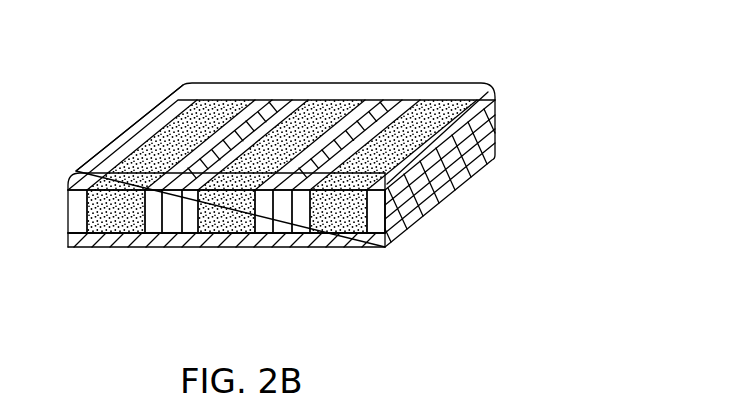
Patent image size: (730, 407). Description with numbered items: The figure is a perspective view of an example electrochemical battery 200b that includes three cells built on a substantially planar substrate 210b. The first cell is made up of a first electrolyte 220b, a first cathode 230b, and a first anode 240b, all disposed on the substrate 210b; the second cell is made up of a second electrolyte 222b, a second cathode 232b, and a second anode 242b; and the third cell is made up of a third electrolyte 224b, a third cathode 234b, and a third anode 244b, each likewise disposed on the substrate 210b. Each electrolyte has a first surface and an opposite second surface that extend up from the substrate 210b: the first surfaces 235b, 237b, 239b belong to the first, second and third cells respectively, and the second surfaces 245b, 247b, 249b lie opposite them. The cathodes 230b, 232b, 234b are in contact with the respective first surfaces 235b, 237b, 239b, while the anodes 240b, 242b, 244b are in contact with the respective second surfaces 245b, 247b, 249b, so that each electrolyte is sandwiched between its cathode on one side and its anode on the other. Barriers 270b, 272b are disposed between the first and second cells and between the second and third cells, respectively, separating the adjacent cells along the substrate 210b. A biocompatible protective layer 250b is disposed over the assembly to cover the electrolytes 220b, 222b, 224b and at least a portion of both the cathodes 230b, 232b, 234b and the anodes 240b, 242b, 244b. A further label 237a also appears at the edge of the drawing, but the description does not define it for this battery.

The electrochemical battery 200b is at (430, 68).
The substrate 210b is at (68, 240).
The first electrolyte 220b is at (100, 236).
The second electrolyte 222b is at (186, 200).
The third electrolyte 224b is at (330, 232).
The first cathode 230b is at (67, 196).
The second cathode 232b is at (170, 205).
The third cathode 234b is at (292, 232).
The first surface 235b is at (97, 205).
The chamber region 237a is at (8, 76).
The first surface 237b is at (207, 210).
The first surface 239b is at (322, 203).
The first anode 240b is at (112, 216).
The second anode 242b is at (238, 235).
The third anode 244b is at (369, 212).
The second surface 245b is at (137, 203).
The second surface 247b is at (252, 209).
The second surface 249b is at (363, 202).
The biocompatible protective layer 250b is at (79, 176).
The barrier 270b is at (150, 212).
The barrier 272b is at (262, 205).